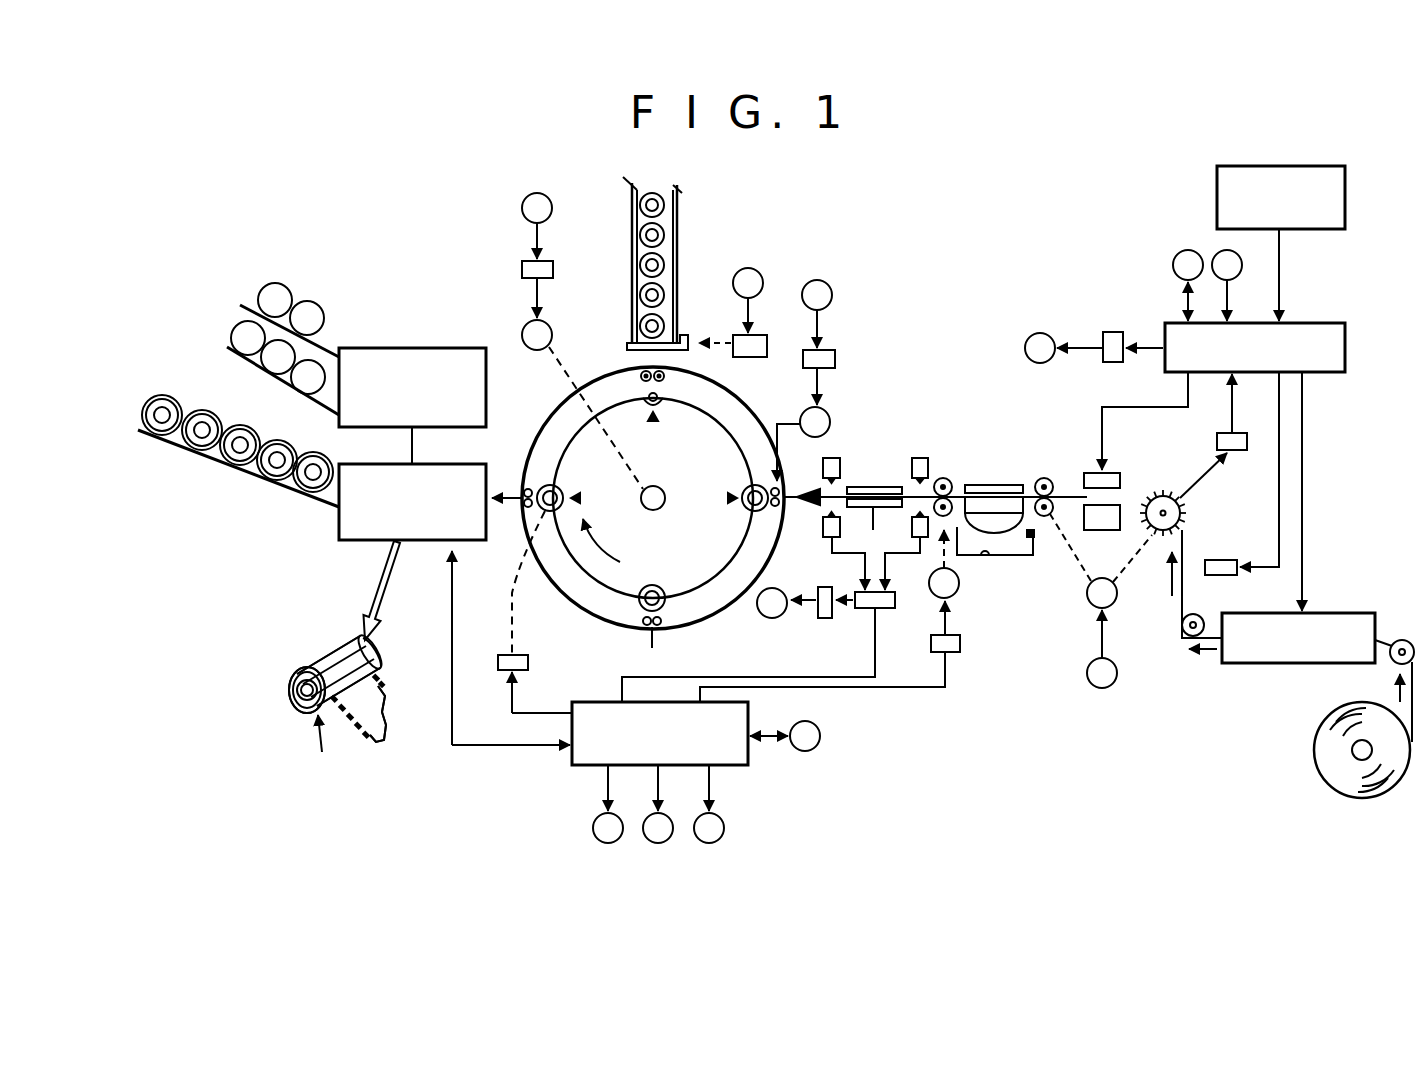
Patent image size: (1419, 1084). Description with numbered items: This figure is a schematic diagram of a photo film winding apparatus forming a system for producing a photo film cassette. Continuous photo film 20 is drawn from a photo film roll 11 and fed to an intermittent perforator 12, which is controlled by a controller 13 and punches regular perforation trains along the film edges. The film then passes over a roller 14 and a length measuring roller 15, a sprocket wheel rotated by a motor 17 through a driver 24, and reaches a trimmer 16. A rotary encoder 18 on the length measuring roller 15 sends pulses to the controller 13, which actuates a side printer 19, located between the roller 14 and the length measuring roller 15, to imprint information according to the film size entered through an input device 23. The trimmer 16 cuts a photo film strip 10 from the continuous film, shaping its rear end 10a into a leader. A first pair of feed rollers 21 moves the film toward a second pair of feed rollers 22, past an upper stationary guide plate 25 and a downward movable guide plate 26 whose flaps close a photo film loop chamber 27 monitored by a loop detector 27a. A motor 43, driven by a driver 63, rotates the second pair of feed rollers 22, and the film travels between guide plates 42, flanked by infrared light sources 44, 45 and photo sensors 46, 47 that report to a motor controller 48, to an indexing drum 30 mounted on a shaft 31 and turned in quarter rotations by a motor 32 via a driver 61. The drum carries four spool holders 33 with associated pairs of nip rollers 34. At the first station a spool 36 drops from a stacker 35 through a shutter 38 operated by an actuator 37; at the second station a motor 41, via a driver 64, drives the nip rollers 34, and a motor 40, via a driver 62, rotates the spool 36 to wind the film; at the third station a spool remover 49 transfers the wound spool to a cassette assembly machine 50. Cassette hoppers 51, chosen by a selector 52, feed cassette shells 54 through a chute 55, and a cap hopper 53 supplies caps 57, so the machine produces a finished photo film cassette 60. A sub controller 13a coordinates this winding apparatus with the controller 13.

The photo film strip 10 is at (838, 495).
The rear end 10a is at (385, 745).
The photo film roll 11 is at (1318, 786).
The intermittent perforator 12 is at (1258, 663).
The controller 13 is at (1330, 323).
The sub controller 13a is at (572, 767).
The roller 14 is at (1182, 633).
The length measuring roller 15 is at (1187, 512).
The trimmer 16 is at (1121, 478).
The motor 17 is at (1117, 592).
The rotary encoder 18 is at (1217, 441).
The side printer 19 is at (1220, 560).
The continuous photo film 20 is at (1392, 640).
The first pair of feed rollers 21 is at (1048, 478).
The second pair of feed rollers 22 is at (950, 480).
The input device 23 is at (1217, 200).
The driver 24 is at (1113, 332).
The upper stationary guide plate 25 is at (1000, 485).
The downward movable guide plate 26 is at (1000, 520).
The photo film loop chamber 27 is at (993, 556).
The loop detector 27a is at (1038, 540).
The indexing drum 30 is at (596, 366).
The shaft 31 is at (650, 510).
The motor 32 is at (522, 335).
The spool holders 33 is at (659, 405).
The nip rollers 34 is at (525, 490).
The stacker 35 is at (632, 262).
The spool 36 is at (664, 238).
The actuator 37 is at (755, 357).
The shutter 38 is at (628, 340).
The motor 40 is at (769, 618).
The motor 41 is at (830, 418).
The photo film guide plates 42 is at (892, 487).
The motor 43 is at (951, 598).
The infrared light source 44 is at (928, 462).
The infrared light source 45 is at (840, 465).
The photo sensor 46 is at (920, 540).
The photo sensor 47 is at (823, 527).
The motor controller 48 is at (895, 604).
The spool remover 49 is at (529, 663).
The cassette assembly machine 50 is at (455, 464).
The cassette hoppers 51 is at (246, 304).
The selector 52 is at (412, 348).
The cap hopper 53 is at (178, 446).
The cassette shells 54 is at (290, 292).
The chute 55 is at (410, 445).
The caps 57 is at (170, 395).
The photo film cassette 60 is at (321, 748).
The driver 61 is at (521, 268).
The driver 62 is at (826, 618).
The driver 63 is at (960, 648).
The driver 64 is at (838, 355).